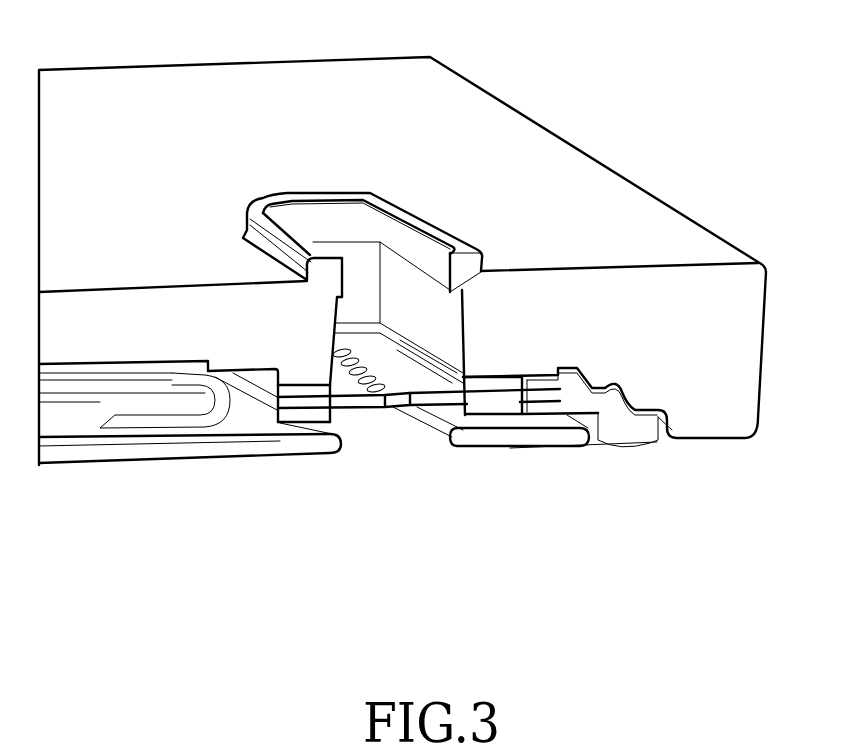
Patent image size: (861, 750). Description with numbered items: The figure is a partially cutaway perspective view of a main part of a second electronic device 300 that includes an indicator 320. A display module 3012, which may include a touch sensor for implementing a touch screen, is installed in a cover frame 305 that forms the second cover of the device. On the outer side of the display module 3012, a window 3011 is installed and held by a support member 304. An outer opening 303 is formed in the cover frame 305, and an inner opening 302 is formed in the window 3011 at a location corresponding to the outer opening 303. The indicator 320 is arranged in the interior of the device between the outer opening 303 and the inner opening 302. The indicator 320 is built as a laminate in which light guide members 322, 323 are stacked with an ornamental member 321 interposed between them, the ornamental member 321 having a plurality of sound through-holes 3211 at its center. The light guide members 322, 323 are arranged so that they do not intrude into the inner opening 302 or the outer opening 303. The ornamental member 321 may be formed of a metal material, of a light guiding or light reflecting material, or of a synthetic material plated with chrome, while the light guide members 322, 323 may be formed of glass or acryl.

The second electronic device 300 is at (190, 476).
The inner opening 302 is at (425, 433).
The outer opening 303 is at (330, 231).
The support member 304 is at (630, 433).
The cover frame 305 is at (660, 240).
The indicator 320 is at (438, 473).
The ornamental member 321 is at (458, 393).
The light guide member 322 is at (515, 392).
The light guide member 323 is at (497, 408).
The window 3011 is at (265, 445).
The display module 3012 is at (82, 417).
The sound through-holes 3211 is at (373, 377).